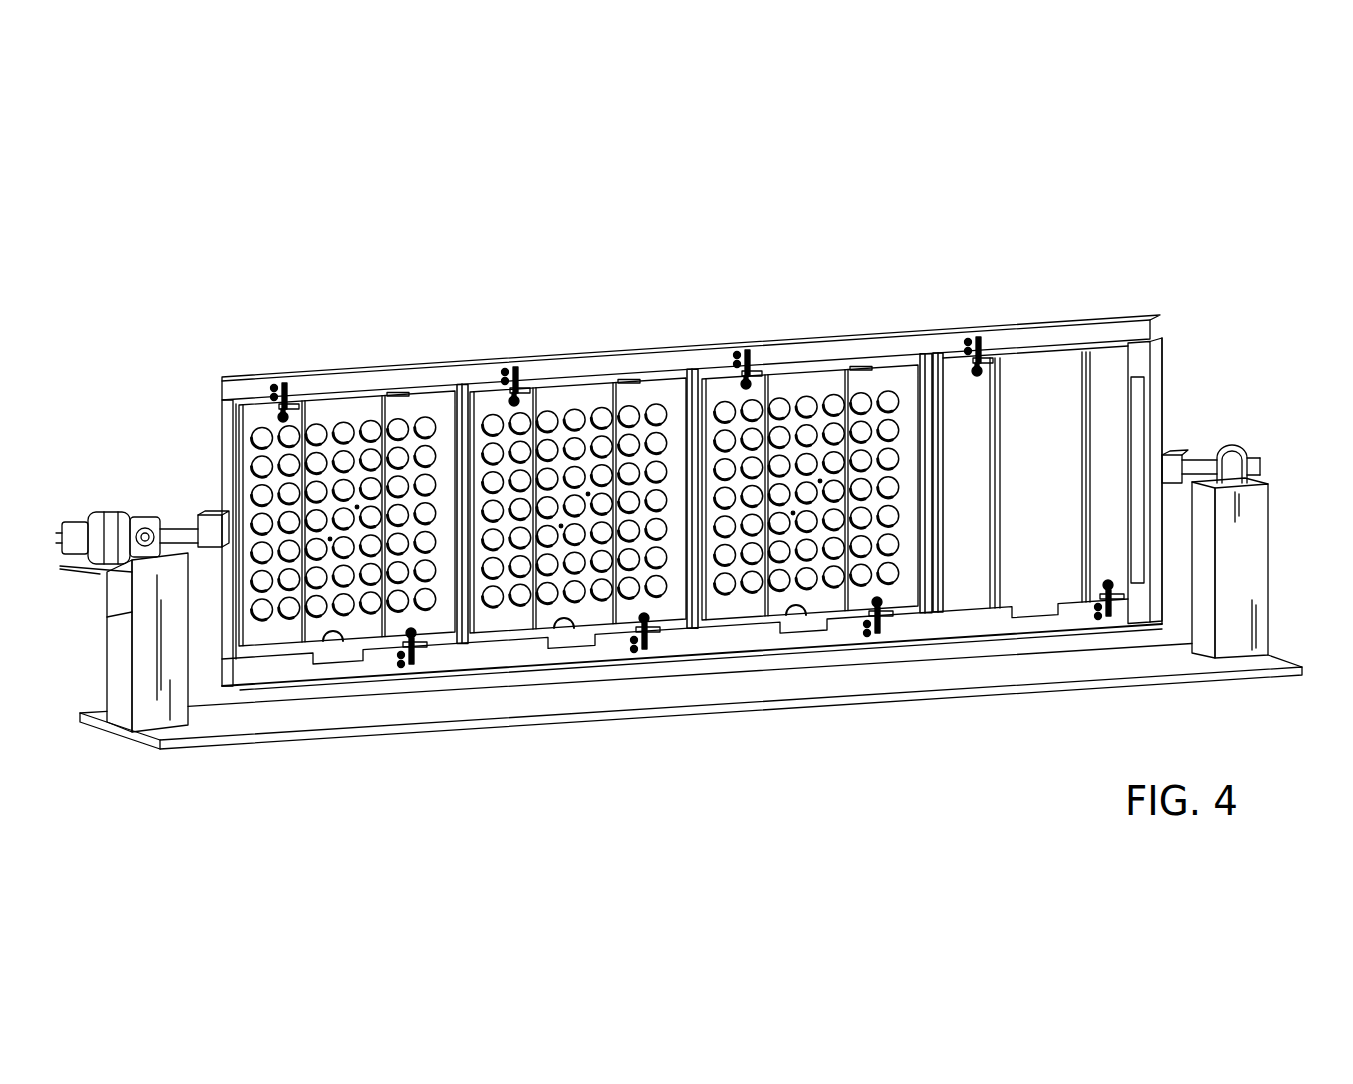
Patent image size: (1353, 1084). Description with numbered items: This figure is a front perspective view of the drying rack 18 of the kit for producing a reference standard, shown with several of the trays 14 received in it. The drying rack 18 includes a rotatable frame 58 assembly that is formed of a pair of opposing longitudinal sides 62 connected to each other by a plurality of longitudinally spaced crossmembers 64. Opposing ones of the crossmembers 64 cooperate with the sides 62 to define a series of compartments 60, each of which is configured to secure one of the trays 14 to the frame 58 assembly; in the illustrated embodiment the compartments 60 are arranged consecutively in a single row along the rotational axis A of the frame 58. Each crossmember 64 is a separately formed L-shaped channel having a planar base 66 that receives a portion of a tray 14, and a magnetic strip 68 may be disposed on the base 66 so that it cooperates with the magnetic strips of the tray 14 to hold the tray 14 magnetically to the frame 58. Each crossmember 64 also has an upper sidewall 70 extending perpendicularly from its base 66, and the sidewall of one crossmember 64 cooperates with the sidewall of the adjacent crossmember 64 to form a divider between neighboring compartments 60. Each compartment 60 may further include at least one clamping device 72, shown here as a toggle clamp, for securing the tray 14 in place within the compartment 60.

The tray 14 is at (808, 386).
The drying rack 18 is at (260, 364).
The frame 58 is at (1142, 308).
The compartment 60 is at (1010, 426).
The longitudinal side 62 is at (868, 332).
The crossmember 64 is at (948, 388).
The planar base 66 is at (1120, 502).
The magnetic strip 68 is at (1133, 440).
The upper sidewall 70 is at (1163, 394).
The clamping device 72 is at (1116, 613).
The rotational axis A is at (1267, 462).